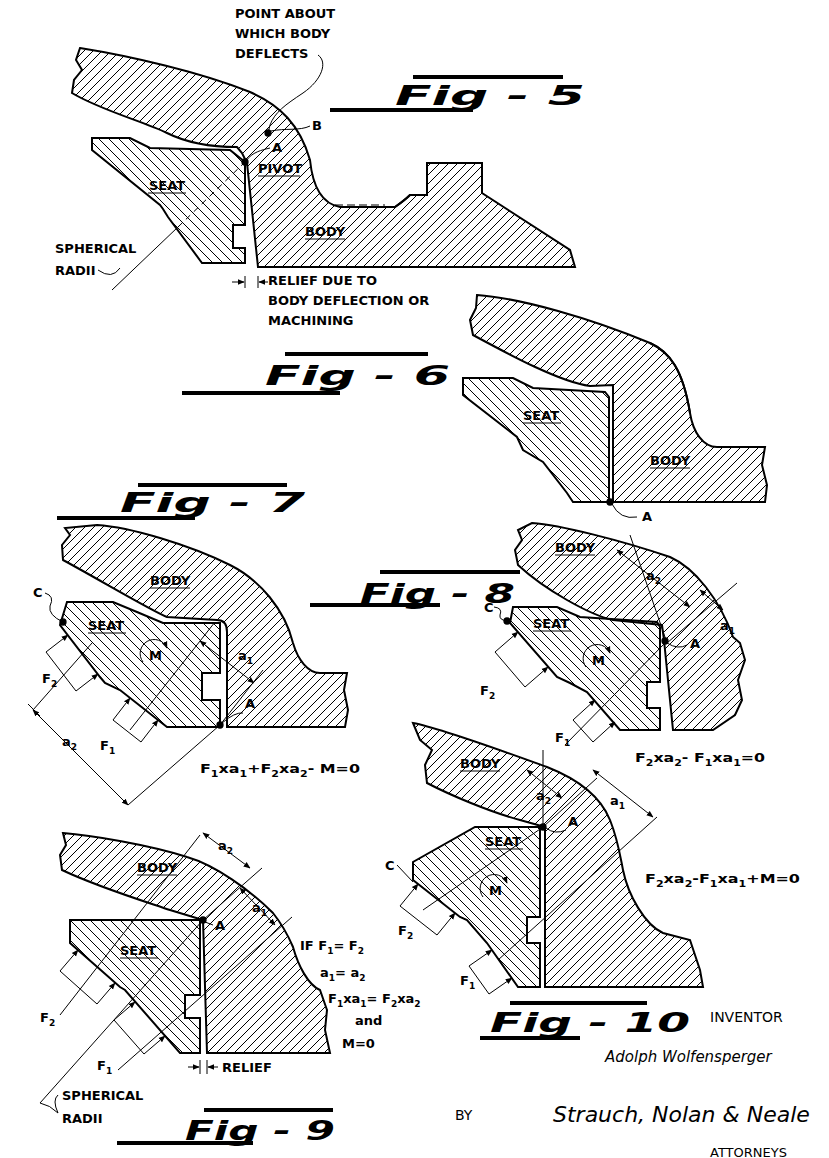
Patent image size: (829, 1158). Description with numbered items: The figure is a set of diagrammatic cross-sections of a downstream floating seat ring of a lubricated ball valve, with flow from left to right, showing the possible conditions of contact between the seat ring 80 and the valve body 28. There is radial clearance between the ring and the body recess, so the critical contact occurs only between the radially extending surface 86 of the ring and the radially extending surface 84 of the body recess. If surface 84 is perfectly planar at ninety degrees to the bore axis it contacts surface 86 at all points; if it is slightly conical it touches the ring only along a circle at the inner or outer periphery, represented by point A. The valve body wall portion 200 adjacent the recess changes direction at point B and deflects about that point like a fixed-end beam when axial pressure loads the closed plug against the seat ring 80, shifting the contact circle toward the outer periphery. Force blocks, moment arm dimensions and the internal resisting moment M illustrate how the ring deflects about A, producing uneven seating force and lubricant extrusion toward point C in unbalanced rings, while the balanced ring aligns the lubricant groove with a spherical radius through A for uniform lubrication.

In FIG. 5, the seat ring 80 is at (125, 165).
In FIG. 6, the seat ring 80 is at (502, 400).
In FIG. 5, the valve body wall portion 200 is at (313, 180).
In FIG. 6, the valve body wall portion 200 is at (698, 430).
In FIG. 5, the valve body 28 is at (405, 205).
In FIG. 6, the valve body 28 is at (680, 388).
In FIG. 5, the radially extending surface of the seat ring 86 is at (243, 258).
In FIG. 6, the radially extending surface of the seat ring 86 is at (612, 430).
In FIG. 5, the radially extending surface of the valve body seat ring recess 84 is at (222, 255).
In FIG. 6, the radially extending surface of the valve body seat ring recess 84 is at (606, 455).